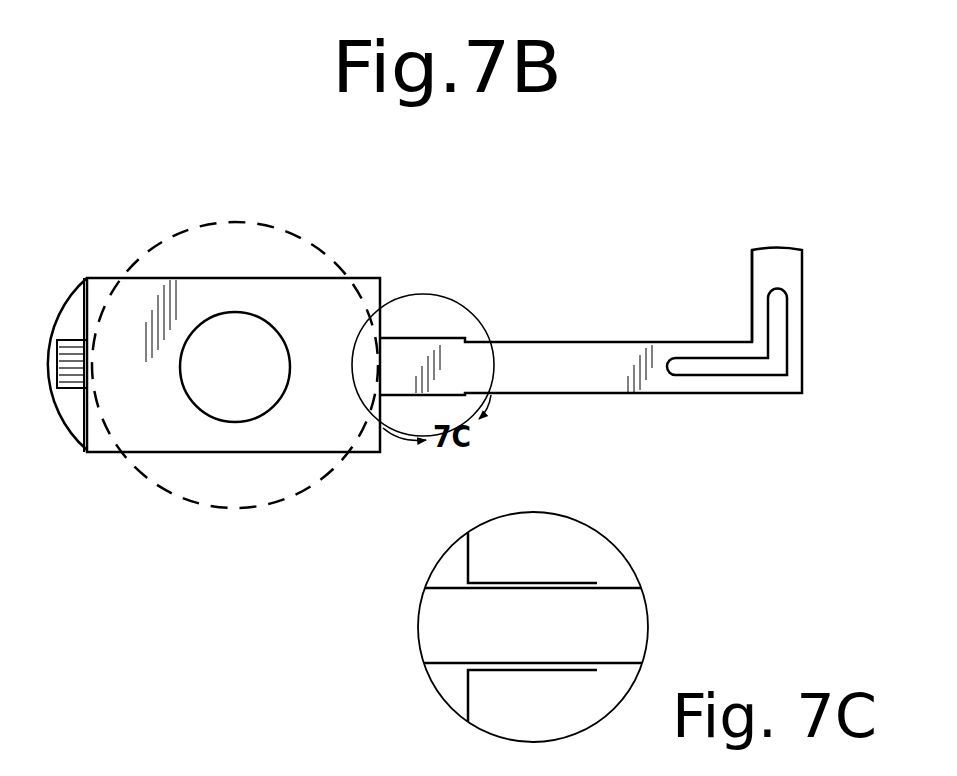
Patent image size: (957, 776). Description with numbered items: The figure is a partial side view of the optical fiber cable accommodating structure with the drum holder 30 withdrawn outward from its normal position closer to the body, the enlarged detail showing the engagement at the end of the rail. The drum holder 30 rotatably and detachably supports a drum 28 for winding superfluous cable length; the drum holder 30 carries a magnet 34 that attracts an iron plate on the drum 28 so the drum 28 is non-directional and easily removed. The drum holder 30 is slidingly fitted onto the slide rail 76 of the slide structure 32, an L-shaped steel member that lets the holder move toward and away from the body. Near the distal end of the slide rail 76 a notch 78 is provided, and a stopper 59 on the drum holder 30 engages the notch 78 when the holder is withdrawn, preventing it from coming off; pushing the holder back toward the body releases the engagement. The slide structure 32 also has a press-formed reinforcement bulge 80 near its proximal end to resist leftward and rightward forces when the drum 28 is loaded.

In FIG. 7B, the drum 28 is at (233, 222).
In FIG. 7B, the drum holder 30 is at (103, 278).
In FIG. 7B, the slide structure 32 is at (752, 258).
In FIG. 7B, the magnet 34 is at (228, 422).
In FIG. 7C, the stopper 59 is at (535, 598).
In FIG. 7B, the slide rail 76 is at (570, 375).
In FIG. 7C, the notch 78 is at (510, 590).
In FIG. 7B, the reinforcement bulge 80 is at (748, 372).